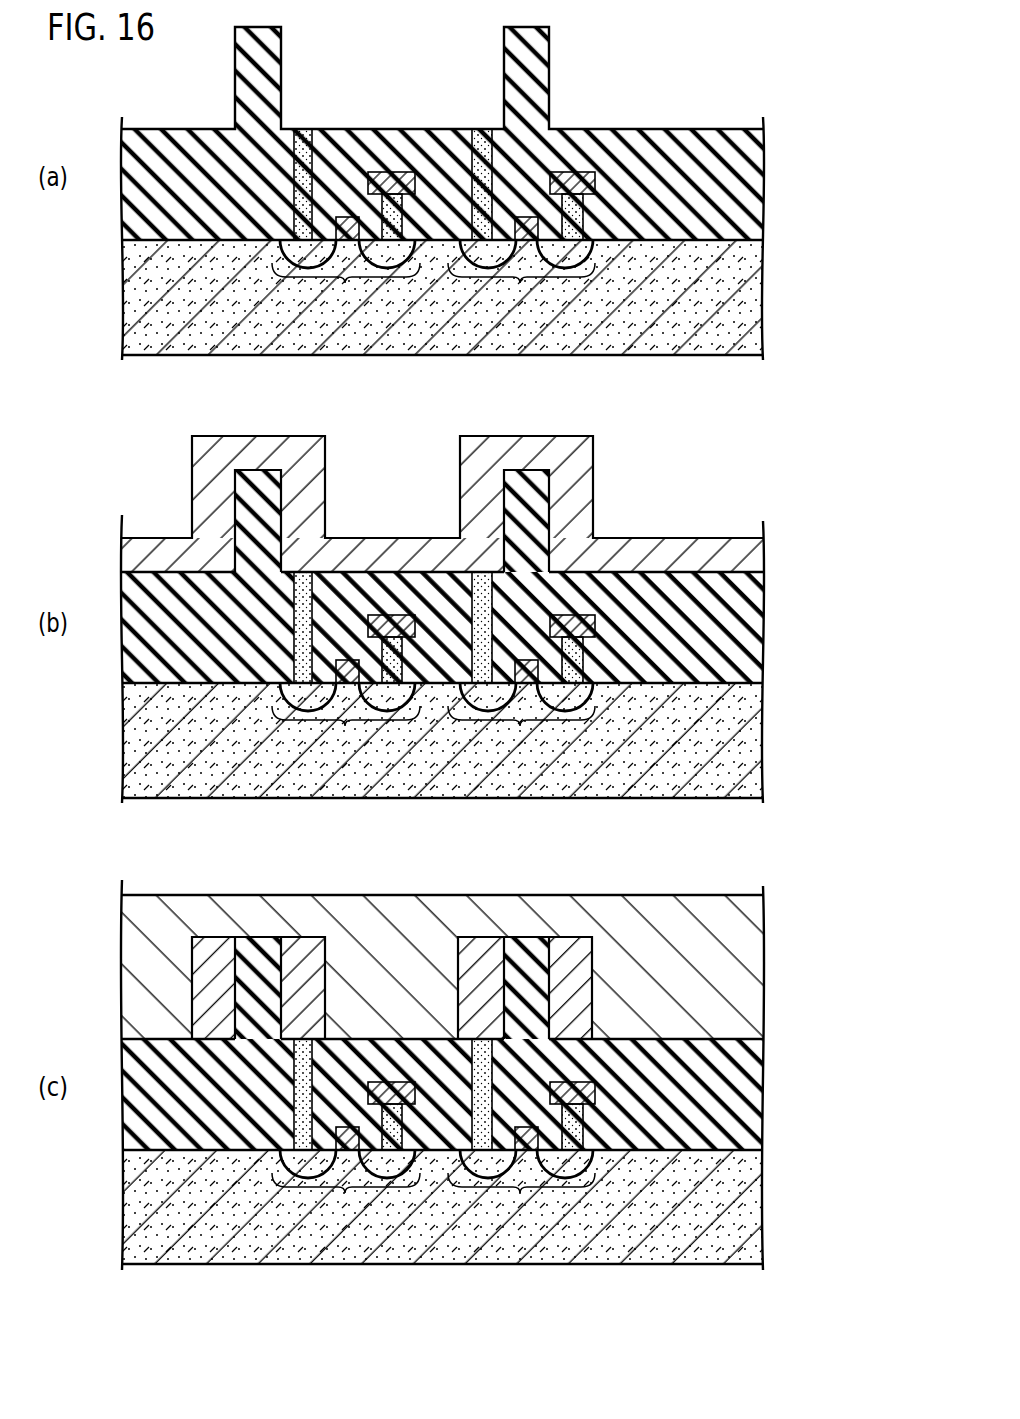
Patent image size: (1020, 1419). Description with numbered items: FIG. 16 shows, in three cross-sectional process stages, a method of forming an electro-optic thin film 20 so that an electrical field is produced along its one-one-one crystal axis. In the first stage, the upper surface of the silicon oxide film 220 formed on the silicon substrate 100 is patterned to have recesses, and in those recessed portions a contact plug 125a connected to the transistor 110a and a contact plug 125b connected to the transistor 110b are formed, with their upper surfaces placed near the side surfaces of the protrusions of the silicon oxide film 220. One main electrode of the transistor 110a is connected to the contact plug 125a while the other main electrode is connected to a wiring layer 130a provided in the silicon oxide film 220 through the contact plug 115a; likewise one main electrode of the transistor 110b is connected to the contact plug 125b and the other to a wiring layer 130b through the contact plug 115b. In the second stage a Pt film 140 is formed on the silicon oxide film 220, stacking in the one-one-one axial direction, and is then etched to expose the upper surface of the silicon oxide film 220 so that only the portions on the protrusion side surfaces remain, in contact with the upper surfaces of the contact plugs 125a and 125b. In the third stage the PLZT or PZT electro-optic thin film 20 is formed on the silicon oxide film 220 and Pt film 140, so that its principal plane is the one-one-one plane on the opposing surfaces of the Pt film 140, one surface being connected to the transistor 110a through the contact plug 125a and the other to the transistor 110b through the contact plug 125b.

The electro-optic thin film 20 is at (745, 953).
The silicon substrate 100 is at (748, 312).
The transistor 110a is at (345, 284).
The transistor 110b is at (520, 284).
The contact plug 115a is at (424, 190).
The contact plug 115b is at (610, 187).
The contact plug 125a is at (307, 135).
The contact plug 125b is at (482, 135).
The wiring layer 130a is at (388, 172).
The wiring layer 130b is at (576, 178).
The Pt film 140 is at (747, 555).
The silicon oxide film 220 is at (750, 187).